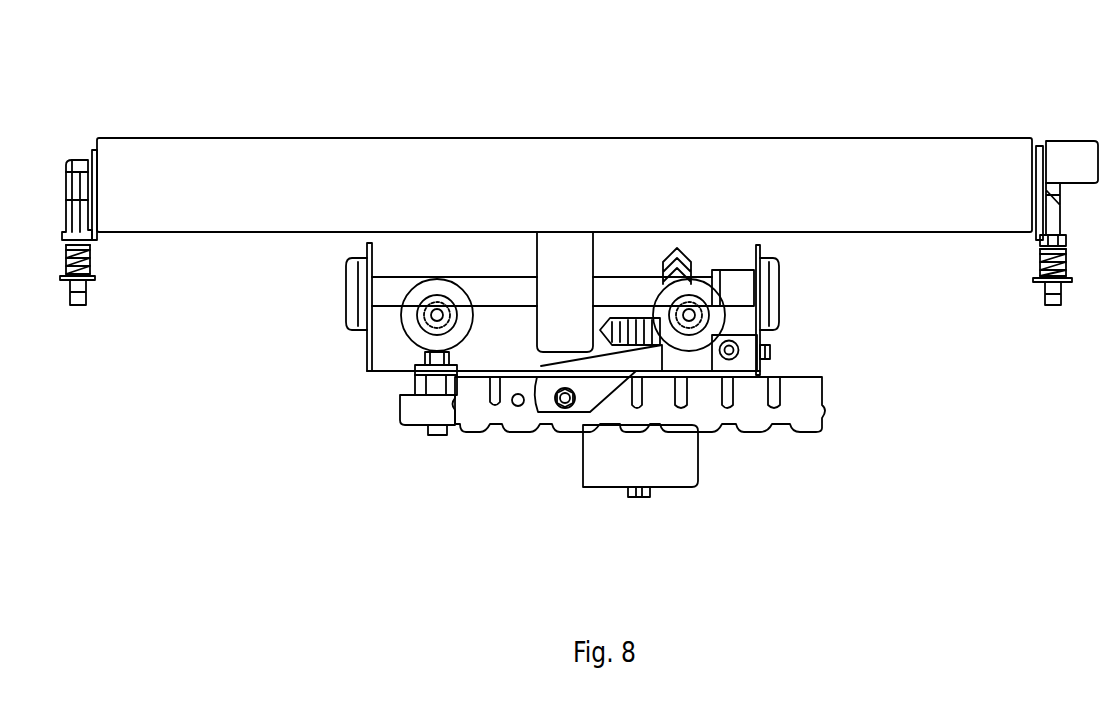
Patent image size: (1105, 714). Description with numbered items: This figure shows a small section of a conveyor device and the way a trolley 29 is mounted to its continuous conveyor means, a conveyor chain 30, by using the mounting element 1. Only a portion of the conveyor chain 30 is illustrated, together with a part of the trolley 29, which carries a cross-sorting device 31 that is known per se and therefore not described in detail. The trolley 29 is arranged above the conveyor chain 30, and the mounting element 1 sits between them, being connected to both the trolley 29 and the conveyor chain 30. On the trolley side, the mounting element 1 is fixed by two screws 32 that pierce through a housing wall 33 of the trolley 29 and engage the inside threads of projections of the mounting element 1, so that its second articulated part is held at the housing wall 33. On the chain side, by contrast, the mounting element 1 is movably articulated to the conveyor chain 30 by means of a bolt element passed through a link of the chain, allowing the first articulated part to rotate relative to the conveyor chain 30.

The trolley 29 is at (276, 72).
The cross-sorting device 31 is at (840, 137).
The conveyor chain 30 is at (818, 395).
The housing wall 33 is at (762, 332).
The screws 32 is at (770, 353).
The mounting element 1 is at (541, 413).